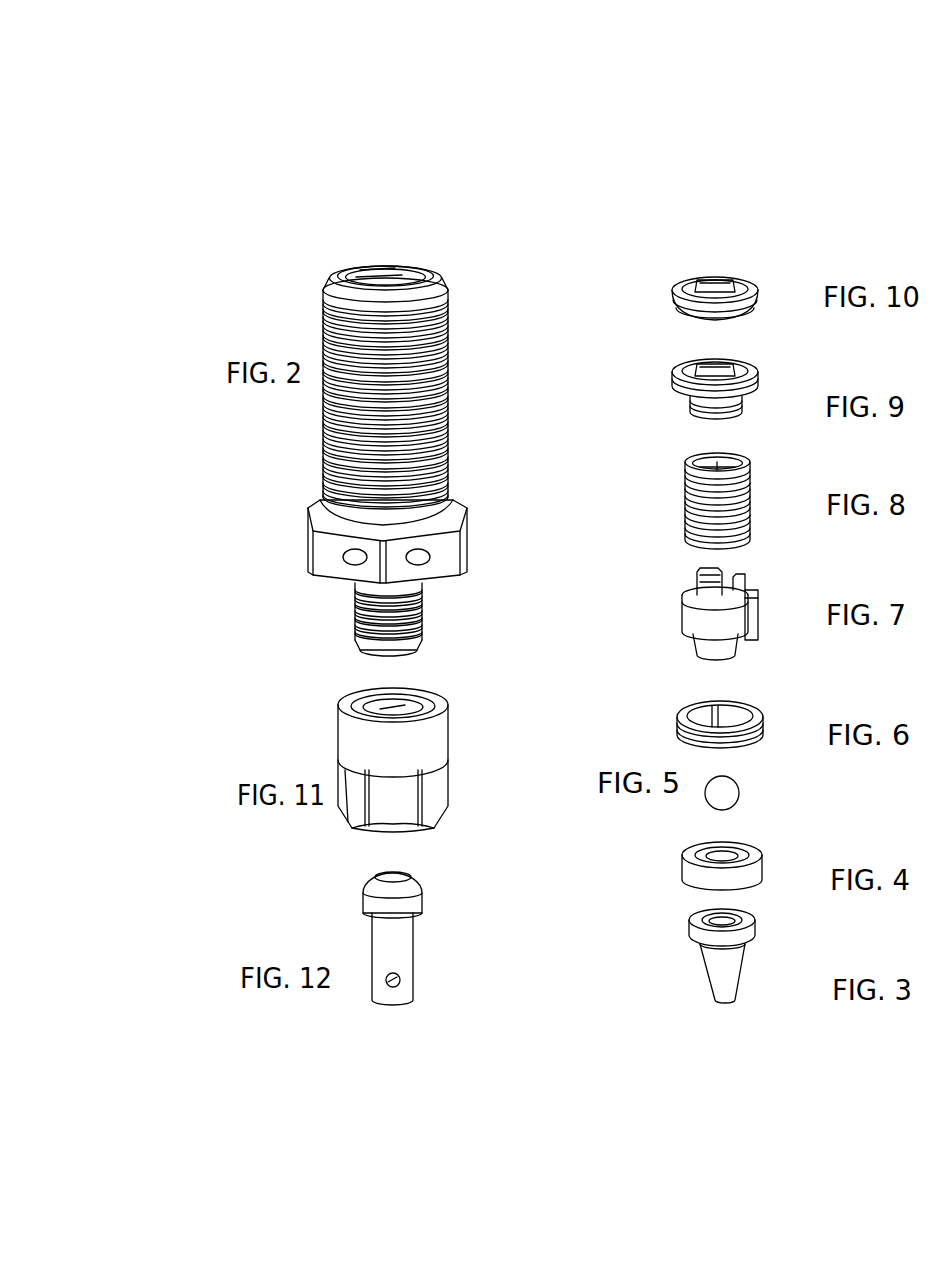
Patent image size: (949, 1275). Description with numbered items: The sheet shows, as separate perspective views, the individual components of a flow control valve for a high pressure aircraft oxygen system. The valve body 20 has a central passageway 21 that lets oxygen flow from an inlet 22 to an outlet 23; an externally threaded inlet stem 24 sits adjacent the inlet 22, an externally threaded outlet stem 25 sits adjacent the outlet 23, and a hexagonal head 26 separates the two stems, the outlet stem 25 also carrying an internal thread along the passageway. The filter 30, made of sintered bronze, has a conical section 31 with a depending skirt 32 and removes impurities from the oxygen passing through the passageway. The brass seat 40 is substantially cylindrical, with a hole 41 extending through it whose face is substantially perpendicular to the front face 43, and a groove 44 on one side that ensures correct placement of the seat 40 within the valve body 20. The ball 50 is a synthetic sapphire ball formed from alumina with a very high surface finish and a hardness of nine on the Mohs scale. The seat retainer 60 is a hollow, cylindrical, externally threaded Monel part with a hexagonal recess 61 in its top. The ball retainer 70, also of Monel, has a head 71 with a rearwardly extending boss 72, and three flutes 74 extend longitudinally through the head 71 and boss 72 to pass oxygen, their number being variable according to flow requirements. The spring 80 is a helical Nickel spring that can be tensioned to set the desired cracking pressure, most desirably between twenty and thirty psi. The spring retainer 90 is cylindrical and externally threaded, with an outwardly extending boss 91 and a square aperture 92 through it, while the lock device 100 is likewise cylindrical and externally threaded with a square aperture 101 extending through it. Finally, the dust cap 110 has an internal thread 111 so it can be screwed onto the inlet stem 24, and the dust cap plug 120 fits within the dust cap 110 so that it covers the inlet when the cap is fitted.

In FIG. 2, the valve body 20 is at (474, 346).
In FIG. 2, the central passageway 21 is at (398, 288).
In FIG. 2, the inlet 22 is at (365, 648).
In FIG. 2, the outlet 23 is at (365, 283).
In FIG. 2, the inlet stem 24 is at (355, 585).
In FIG. 2, the outlet stem 25 is at (450, 400).
In FIG. 2, the hexagonal head 26 is at (330, 553).
In FIG. 3, the filter 30 is at (770, 938).
In FIG. 3, the conical section 31 is at (718, 981).
In FIG. 3, the depending skirt 32 is at (698, 933).
In FIG. 4, the seat 40 is at (768, 869).
In FIG. 4, the hole 41 is at (720, 852).
In FIG. 4, the front face 43 is at (700, 855).
In FIG. 4, the groove 44 is at (742, 855).
In FIG. 5, the ball 50 is at (718, 795).
In FIG. 6, the seat retainer 60 is at (772, 704).
In FIG. 6, the hexagonal recess 61 is at (708, 715).
In FIG. 7, the ball retainer 70 is at (771, 586).
In FIG. 7, the head 71 is at (688, 620).
In FIG. 7, the boss 72 is at (690, 590).
In FIG. 7, the flutes 74 is at (727, 577).
In FIG. 8, the spring 80 is at (771, 467).
In FIG. 9, the spring retainer 90 is at (769, 356).
In FIG. 9, the boss 91 is at (715, 417).
In FIG. 9, the square aperture 92 is at (715, 370).
In FIG. 10, the lock device 100 is at (769, 259).
In FIG. 10, the square aperture 101 is at (715, 290).
In FIG. 11, the dust cap 110 is at (465, 713).
In FIG. 11, the internal thread 111 is at (398, 712).
In FIG. 12, the dust cap plug 120 is at (451, 913).